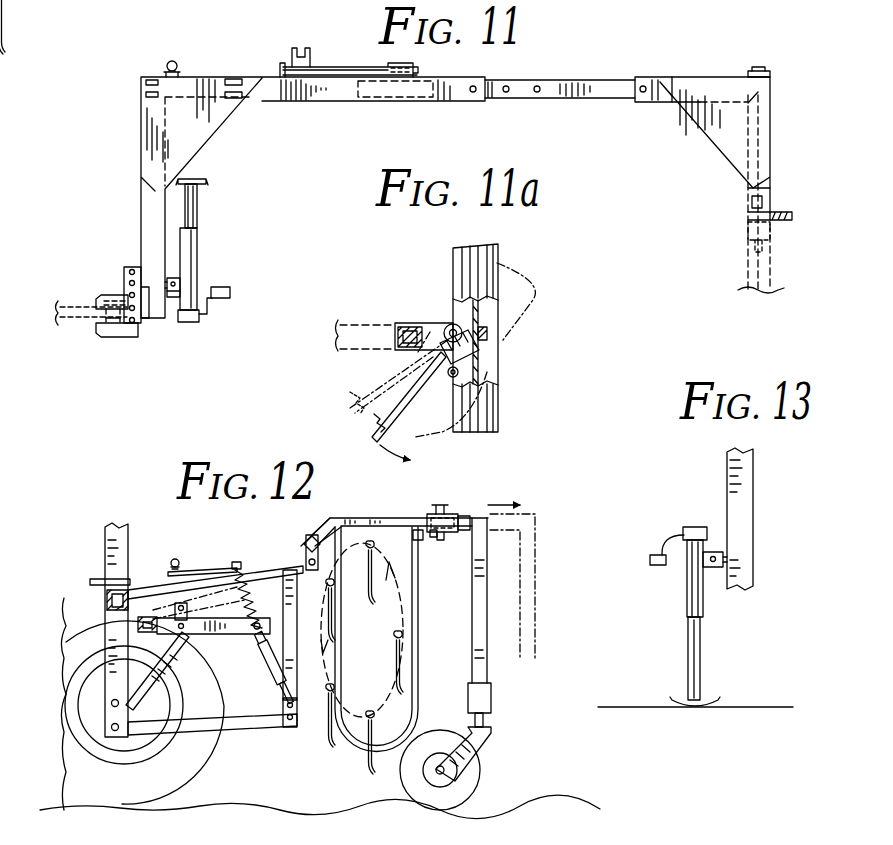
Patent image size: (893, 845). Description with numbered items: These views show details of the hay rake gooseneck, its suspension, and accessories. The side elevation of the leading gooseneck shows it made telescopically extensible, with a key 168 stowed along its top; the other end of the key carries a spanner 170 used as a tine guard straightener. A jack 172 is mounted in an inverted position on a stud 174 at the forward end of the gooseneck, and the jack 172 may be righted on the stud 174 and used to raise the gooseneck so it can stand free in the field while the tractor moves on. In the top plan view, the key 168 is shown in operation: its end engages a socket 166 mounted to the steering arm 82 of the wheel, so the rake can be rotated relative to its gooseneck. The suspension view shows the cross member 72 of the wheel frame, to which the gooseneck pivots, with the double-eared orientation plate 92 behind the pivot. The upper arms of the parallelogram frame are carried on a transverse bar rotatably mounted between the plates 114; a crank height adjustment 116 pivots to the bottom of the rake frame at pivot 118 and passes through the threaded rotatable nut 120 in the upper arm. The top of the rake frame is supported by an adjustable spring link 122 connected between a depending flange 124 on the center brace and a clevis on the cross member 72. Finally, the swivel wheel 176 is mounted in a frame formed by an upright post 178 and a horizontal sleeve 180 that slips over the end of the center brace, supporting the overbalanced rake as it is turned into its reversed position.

In FIG. 12, the cross member 72 is at (87, 606).
In FIG. 11A, the steering arm 82 is at (498, 338).
In FIG. 12, the orientation plate 92 is at (100, 579).
In FIG. 12, the plates 114 is at (137, 610).
In FIG. 12, the crank height adjustment 116 is at (203, 572).
In FIG. 12, the pivot to rake frame 118 is at (288, 732).
In FIG. 12, the threaded rotatable nut 120 is at (255, 634).
In FIG. 12, the adjustable spring link 122 is at (258, 568).
In FIG. 12, the depending flange 124 is at (317, 545).
In FIG. 11A, the socket 166 is at (492, 369).
In FIG. 11, the key 168 is at (338, 65).
In FIG. 11A, the key 168 is at (402, 384).
In FIG. 11, the spanner 170 is at (292, 50).
In FIG. 11A, the spanner 170 is at (370, 418).
In FIG. 11, the jack 172 is at (200, 243).
In FIG. 13, the jack 172 is at (685, 601).
In FIG. 11, the stud 174 is at (168, 298).
In FIG. 13, the stud 174 is at (723, 568).
In FIG. 12, the swivel wheel 176 is at (492, 749).
In FIG. 12, the upright post 178 is at (472, 630).
In FIG. 12, the horizontal sleeve 180 is at (460, 513).